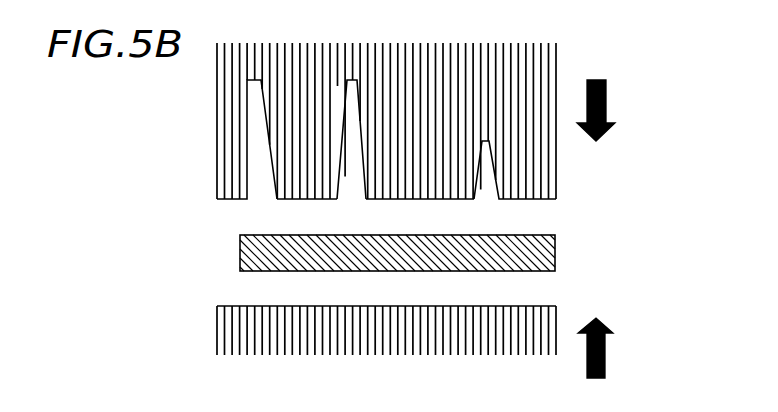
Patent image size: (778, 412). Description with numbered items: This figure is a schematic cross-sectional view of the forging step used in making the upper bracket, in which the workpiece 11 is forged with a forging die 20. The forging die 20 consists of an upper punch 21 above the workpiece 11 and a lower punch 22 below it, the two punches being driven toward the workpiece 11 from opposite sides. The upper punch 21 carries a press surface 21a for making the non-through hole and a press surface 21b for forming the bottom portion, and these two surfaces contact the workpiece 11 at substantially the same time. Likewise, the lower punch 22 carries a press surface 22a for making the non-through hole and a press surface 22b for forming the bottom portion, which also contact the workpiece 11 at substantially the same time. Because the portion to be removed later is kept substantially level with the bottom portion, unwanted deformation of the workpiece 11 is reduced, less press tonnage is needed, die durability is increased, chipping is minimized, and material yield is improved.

The forging die 20 is at (147, 80).
The upper punch 21 is at (217, 107).
The press surface of the upper punch for making the non-through hole 21a is at (302, 200).
The press surface of the upper punch for forming the bottom portion 21b is at (417, 200).
The lower punch 22 is at (217, 333).
The press surface of the lower punch for making the non-through hole 22a is at (320, 306).
The press surface of the lower punch for forming the bottom portion 22b is at (440, 306).
The workpiece 11 is at (555, 252).